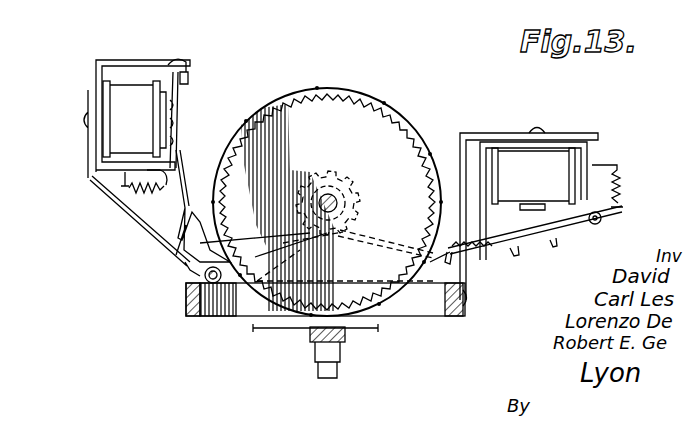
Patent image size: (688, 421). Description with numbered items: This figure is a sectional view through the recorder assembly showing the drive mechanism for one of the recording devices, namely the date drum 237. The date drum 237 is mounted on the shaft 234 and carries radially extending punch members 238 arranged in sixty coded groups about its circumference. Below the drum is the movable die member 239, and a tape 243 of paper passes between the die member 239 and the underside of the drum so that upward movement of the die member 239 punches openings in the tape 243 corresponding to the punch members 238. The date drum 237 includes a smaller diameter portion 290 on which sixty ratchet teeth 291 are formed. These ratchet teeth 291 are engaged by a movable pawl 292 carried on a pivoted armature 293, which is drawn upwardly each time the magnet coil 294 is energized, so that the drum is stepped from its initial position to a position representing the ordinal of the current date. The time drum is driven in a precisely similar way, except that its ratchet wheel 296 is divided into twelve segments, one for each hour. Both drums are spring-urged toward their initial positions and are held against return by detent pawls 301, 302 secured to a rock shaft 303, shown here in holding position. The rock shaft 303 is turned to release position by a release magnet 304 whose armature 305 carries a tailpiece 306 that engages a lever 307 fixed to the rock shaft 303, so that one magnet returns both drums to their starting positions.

The shaft 234 is at (338, 203).
The date drum 237 is at (372, 90).
The punch members 238 is at (326, 89).
The die member 239 is at (347, 338).
The tape 243 is at (290, 332).
The smaller diameter portion 290 is at (400, 138).
The ratchet teeth 291 is at (397, 127).
The movable pawl 292 is at (446, 288).
The pivoted armature 293 is at (571, 228).
The magnet coil 294 is at (567, 163).
The ratchet wheel 296 is at (352, 168).
The detent pawl 301 is at (243, 317).
The detent pawl 302 is at (326, 258).
The rock shaft 303 is at (202, 318).
The release magnet 304 is at (118, 128).
The armature 305 is at (178, 104).
The tailpiece 306 is at (174, 178).
The lever 307 is at (174, 253).